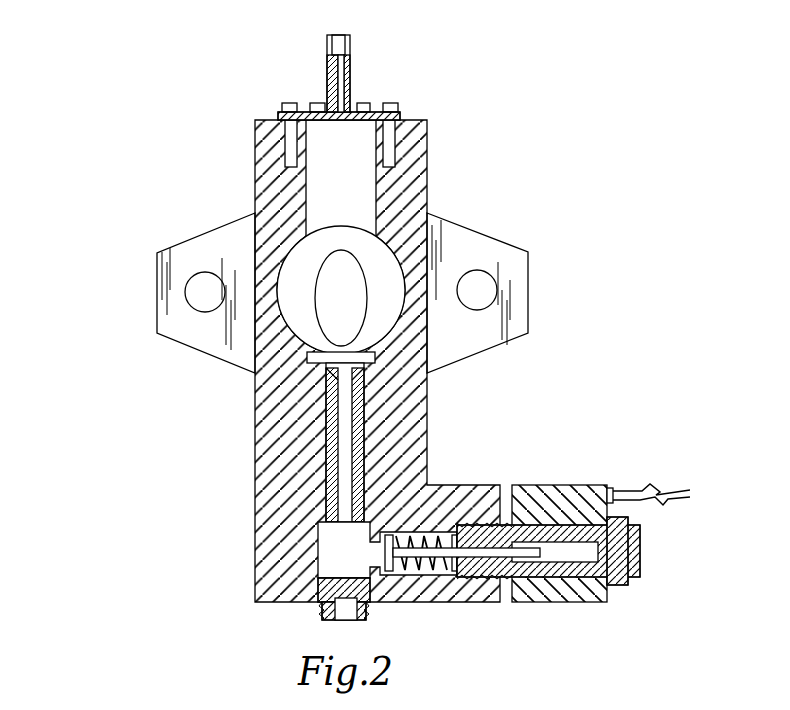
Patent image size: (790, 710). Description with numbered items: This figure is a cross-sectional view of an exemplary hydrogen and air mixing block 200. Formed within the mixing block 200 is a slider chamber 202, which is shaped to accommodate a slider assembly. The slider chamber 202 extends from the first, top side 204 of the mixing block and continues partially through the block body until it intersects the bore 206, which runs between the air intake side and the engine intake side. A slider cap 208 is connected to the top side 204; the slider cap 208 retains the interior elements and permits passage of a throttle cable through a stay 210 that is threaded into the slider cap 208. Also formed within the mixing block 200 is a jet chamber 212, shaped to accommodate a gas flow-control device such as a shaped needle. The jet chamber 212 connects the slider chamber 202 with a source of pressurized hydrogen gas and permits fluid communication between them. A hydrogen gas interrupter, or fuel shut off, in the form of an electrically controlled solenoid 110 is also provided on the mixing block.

The mixing block 200 is at (423, 327).
The top side 204 is at (263, 120).
The slider chamber 202 is at (360, 193).
The bore 206 is at (360, 313).
The slider cap 208 is at (377, 108).
The stay 210 is at (328, 72).
The jet chamber 212 is at (343, 430).
The electrically controlled solenoid 110 is at (556, 485).